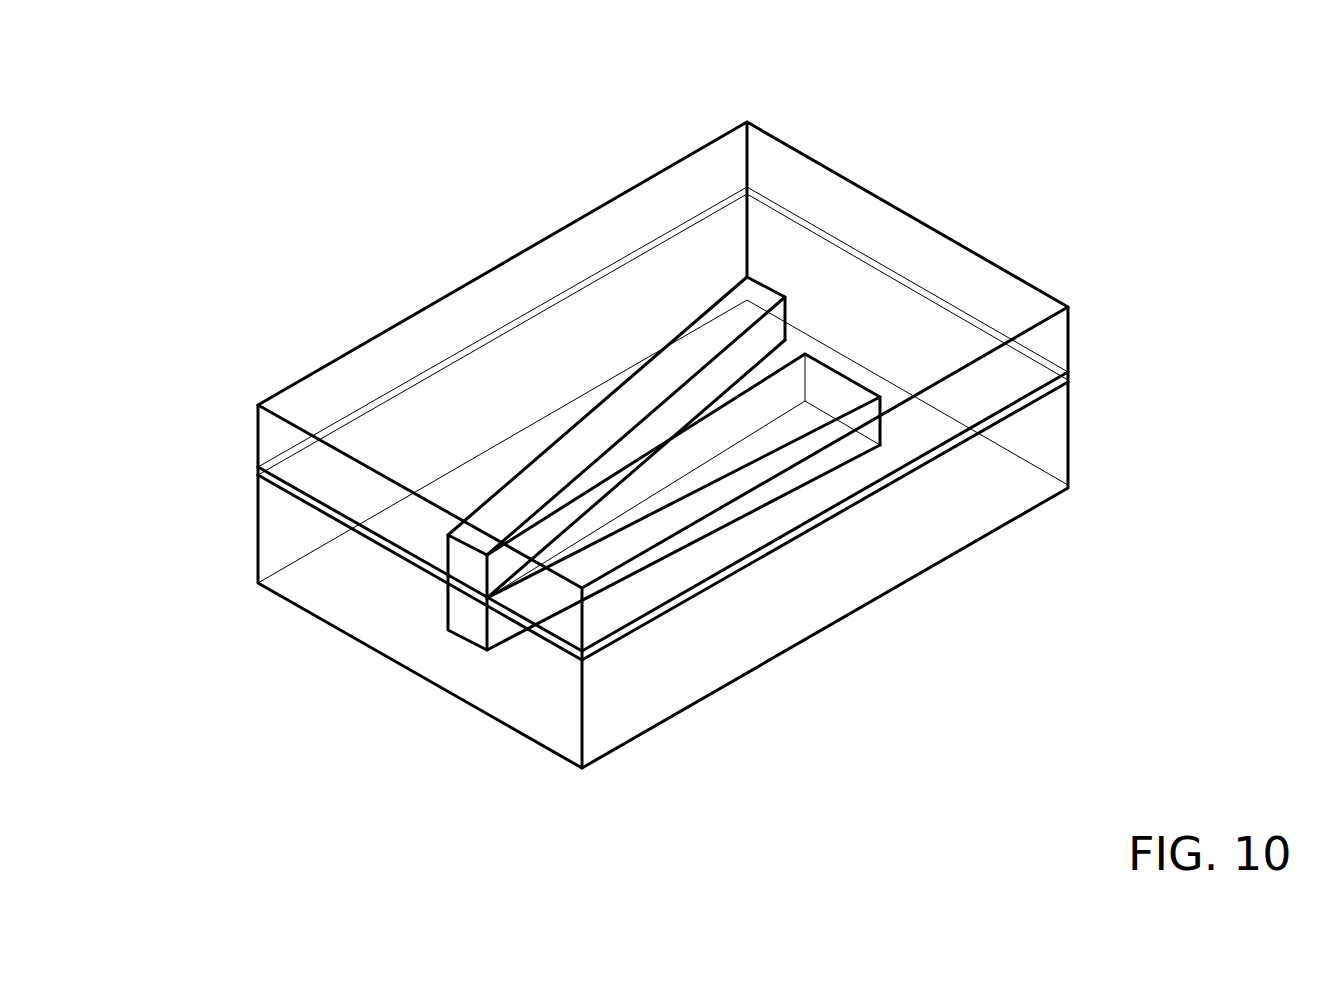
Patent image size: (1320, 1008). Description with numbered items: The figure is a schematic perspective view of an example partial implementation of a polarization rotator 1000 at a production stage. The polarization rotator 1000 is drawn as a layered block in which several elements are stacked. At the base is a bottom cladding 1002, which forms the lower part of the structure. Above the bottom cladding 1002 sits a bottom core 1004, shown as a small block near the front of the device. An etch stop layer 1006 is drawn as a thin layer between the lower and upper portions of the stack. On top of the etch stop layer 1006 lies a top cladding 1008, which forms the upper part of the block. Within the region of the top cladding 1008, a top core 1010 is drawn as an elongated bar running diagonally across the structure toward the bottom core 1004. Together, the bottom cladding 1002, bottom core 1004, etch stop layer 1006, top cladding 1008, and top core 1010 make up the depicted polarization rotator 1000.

The polarization rotator 1000 is at (401, 141).
The bottom cladding 1002 is at (800, 604).
The bottom core 1004 is at (478, 615).
The etch stop layer 1006 is at (323, 507).
The top cladding 1008 is at (312, 472).
The top core 1010 is at (740, 318).